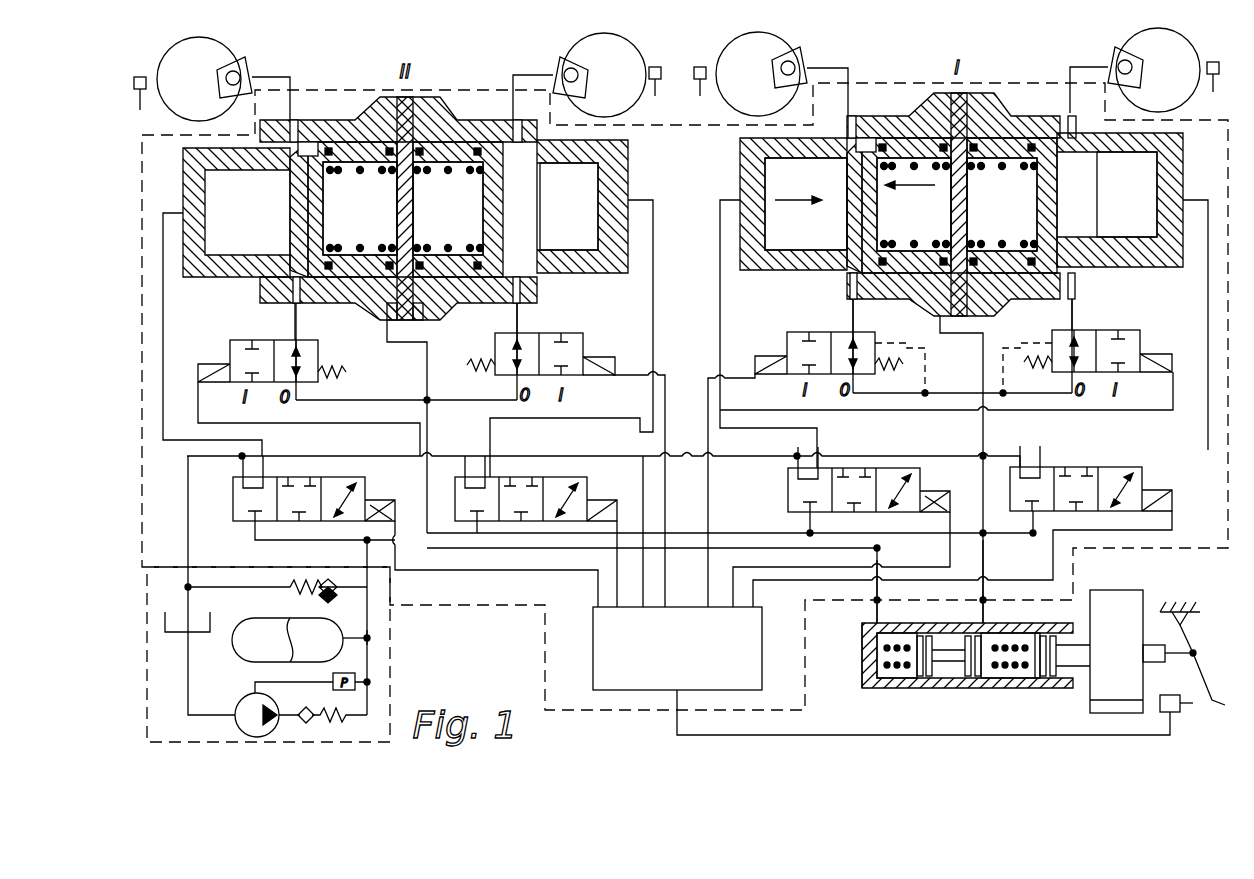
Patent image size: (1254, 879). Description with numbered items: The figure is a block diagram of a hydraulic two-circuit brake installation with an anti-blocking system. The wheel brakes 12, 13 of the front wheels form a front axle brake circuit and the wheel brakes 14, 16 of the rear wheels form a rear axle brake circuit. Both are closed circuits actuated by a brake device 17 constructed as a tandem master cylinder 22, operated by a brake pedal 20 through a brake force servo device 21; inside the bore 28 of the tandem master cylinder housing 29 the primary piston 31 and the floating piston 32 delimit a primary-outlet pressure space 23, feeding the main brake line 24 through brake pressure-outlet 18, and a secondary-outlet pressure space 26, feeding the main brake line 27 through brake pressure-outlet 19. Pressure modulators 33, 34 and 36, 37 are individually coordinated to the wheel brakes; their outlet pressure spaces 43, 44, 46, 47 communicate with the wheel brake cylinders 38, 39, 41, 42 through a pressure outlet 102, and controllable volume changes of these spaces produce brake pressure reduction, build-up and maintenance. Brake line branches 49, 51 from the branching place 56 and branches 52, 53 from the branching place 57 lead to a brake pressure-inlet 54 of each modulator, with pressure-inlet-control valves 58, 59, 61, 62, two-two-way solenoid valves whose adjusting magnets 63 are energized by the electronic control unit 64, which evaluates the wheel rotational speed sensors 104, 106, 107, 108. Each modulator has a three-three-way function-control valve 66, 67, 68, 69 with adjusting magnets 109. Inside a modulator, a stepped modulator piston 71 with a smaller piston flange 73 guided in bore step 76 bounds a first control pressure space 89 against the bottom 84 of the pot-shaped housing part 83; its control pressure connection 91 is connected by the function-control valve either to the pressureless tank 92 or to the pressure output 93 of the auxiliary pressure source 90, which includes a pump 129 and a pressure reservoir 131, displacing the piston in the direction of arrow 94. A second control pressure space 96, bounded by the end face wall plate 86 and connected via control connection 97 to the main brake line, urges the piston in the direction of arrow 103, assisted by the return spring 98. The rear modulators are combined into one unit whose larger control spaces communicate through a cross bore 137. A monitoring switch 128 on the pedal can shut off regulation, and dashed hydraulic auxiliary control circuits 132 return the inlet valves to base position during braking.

The wheel brake 12 is at (758, 74).
The wheel brake 13 is at (1158, 70).
The wheel brake 14 is at (199, 79).
The wheel brake 16 is at (604, 75).
The brake device 17 is at (860, 667).
The brake pressure-outlet 18 is at (986, 603).
The brake pressure-outlet 19 is at (879, 603).
The brake pedal 20 is at (1206, 670).
The brake force servo device 21 is at (1141, 605).
The tandem master cylinder 22 is at (860, 632).
The primary-outlet pressure space 23 is at (1025, 680).
The main brake line 24 is at (987, 549).
The secondary-outlet pressure space 26 is at (871, 685).
The main brake line 27 is at (881, 576).
The bore 28 is at (996, 680).
The tandem master cylinder housing 29 is at (946, 685).
The primary piston 31 is at (1053, 680).
The floating piston 32 is at (918, 680).
The pressure modulator 33 is at (908, 110).
The pressure modulator 34 is at (998, 110).
The pressure modulator 36 is at (368, 112).
The pressure modulator 37 is at (445, 112).
The wheel brake cylinder 38 is at (793, 61).
The wheel brake cylinder 39 is at (1118, 67).
The wheel brake cylinder 41 is at (241, 75).
The wheel brake cylinder 42 is at (564, 74).
The outlet pressure space 43 is at (852, 148).
The outlet pressure space 44 is at (1072, 138).
The outlet pressure space 46 is at (295, 150).
The outlet pressure space 47 is at (518, 140).
The brake line branch 49 is at (850, 315).
The brake line branch 51 is at (1075, 318).
The brake line branch 52 is at (292, 330).
The brake line branch 53 is at (520, 325).
The brake pressure-inlet 54 is at (297, 305).
The branching place 56 is at (983, 412).
The branching place 57 is at (427, 398).
The pressure-inlet-control valve 58 is at (785, 348).
The pressure-inlet-control valve 59 is at (1143, 348).
The pressure-inlet-control valve 61 is at (228, 355).
The pressure-inlet-control valve 62 is at (594, 348).
The adjusting magnet 63 is at (210, 385).
The electronic control unit 64 is at (881, 671).
The function-control valve 66 is at (796, 495).
The function-control valve 67 is at (1146, 480).
The function-control valve 68 is at (240, 500).
The function-control valve 69 is at (586, 490).
The modulator piston 71 is at (324, 192).
The piston flange 73 is at (232, 245).
The bore step 76 is at (1136, 245).
The pot-shaped housing part 83 is at (478, 132).
The bottom 84 is at (741, 158).
The end face wall plate 86 is at (406, 178).
The first control pressure space 89 is at (764, 200).
The auxiliary pressure source 90 is at (391, 656).
The control pressure connection 91 is at (1166, 190).
The pressureless tank 92 is at (206, 620).
The pressure output 93 is at (367, 636).
The arrow 94 is at (791, 199).
The second control pressure space 96 is at (440, 312).
The control connection 97 is at (390, 310).
The return spring 98 is at (360, 208).
The pressure outlet 102 is at (302, 148).
The arrow 103 is at (915, 186).
The wheel rotational speed sensor 104 is at (708, 94).
The wheel rotational speed sensor 106 is at (1211, 90).
The wheel rotational speed sensor 107 is at (142, 105).
The wheel rotational speed sensor 108 is at (651, 94).
The adjusting magnet 109 is at (383, 505).
The monitoring switch 128 is at (1173, 691).
The pump 129 is at (239, 710).
The pressure reservoir 131 is at (259, 620).
The hydraulic auxiliary control circuit 132 is at (926, 368).
The cross bore 137 is at (422, 228).